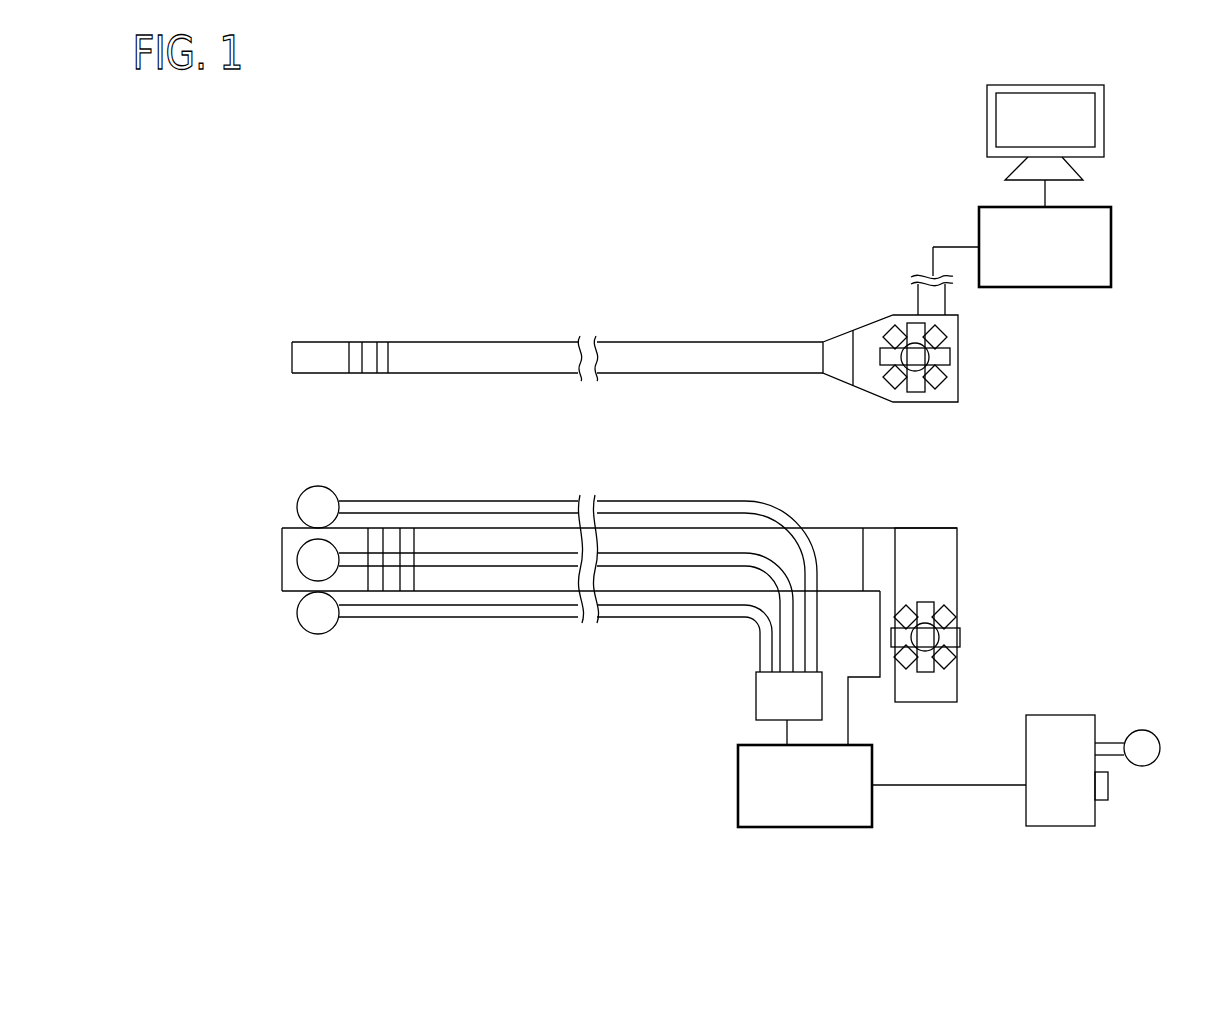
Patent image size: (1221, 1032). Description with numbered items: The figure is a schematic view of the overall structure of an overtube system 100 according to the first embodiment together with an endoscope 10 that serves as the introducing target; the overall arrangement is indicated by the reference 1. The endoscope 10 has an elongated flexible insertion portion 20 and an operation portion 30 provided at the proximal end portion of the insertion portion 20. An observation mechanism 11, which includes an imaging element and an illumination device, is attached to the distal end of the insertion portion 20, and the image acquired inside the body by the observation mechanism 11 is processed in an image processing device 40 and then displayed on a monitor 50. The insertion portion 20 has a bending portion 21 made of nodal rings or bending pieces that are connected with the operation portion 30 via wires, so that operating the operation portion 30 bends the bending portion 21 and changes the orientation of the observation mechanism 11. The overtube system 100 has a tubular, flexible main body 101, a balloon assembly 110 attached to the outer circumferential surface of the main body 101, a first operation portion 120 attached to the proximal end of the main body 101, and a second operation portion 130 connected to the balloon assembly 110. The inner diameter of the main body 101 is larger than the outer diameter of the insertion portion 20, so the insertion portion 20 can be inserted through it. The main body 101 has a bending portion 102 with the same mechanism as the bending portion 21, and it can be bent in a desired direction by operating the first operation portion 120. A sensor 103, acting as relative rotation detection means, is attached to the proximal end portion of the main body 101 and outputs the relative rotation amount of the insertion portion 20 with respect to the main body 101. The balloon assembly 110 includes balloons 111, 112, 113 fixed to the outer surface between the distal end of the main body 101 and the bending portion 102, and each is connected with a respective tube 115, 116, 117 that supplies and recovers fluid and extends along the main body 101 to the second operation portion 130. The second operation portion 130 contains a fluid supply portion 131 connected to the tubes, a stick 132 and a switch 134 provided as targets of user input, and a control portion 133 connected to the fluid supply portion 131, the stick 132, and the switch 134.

The endoscope system 1 is at (862, 151).
The endoscope 10 is at (622, 310).
The observation mechanism 11 is at (290, 357).
The insertion portion 20 is at (458, 355).
The bending portion 21 is at (383, 350).
The operation portion 30 is at (867, 311).
The image processing device 40 is at (1111, 244).
The monitor 50 is at (1104, 118).
The overtube system 100 is at (577, 608).
The main body 101 is at (833, 560).
The bending portion 102 is at (392, 580).
The sensor 103 is at (879, 540).
The balloon assembly 110 is at (280, 608).
The balloon 111 is at (318, 497).
The balloon 112 is at (310, 560).
The balloon 113 is at (318, 648).
The tube 115 is at (655, 502).
The tube 116 is at (667, 560).
The tube 117 is at (622, 607).
The first operation portion 120 is at (978, 633).
The second operation portion 130 is at (936, 755).
The fluid supply portion 131 is at (756, 693).
The stick 132 is at (1142, 738).
The control portion 133 is at (797, 827).
The switch 134 is at (1108, 786).